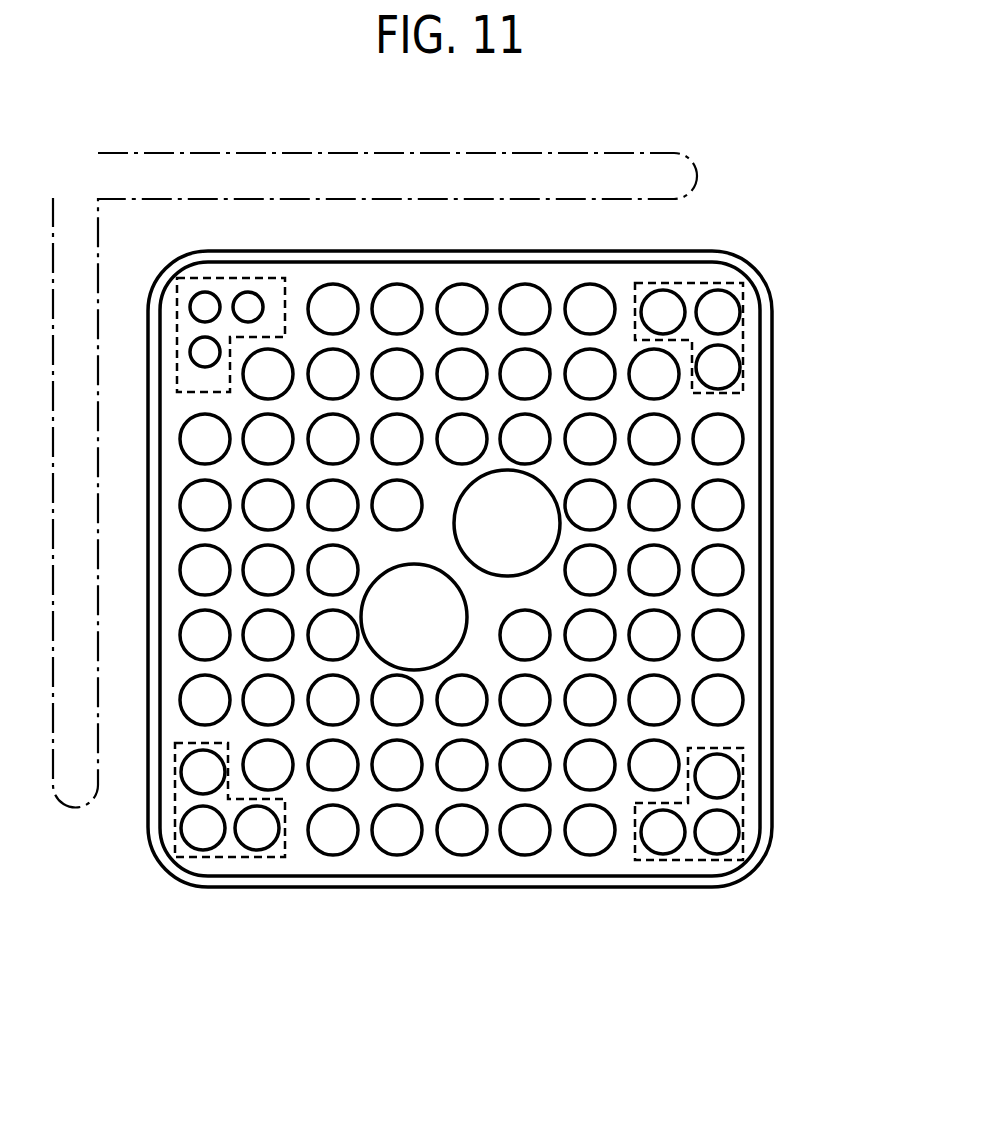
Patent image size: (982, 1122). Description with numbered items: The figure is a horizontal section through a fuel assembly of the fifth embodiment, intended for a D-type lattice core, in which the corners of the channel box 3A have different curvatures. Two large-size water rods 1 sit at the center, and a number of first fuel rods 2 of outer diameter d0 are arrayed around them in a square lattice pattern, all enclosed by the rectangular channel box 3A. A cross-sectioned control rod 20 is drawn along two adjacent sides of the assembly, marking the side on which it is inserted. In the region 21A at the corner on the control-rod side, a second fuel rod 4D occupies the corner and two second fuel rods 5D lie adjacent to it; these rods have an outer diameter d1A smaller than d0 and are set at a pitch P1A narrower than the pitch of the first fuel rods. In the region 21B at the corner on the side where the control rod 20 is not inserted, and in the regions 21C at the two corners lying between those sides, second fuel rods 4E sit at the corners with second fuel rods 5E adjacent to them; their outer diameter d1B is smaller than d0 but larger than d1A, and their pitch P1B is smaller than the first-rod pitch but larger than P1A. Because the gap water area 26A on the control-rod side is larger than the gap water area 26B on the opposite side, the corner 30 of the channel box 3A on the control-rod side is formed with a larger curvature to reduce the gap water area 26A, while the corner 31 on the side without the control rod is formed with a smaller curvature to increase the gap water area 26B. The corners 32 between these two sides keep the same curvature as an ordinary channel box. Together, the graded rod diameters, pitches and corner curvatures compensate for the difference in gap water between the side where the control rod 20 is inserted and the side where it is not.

The water rod 1 is at (450, 628).
The first fuel rod 2 is at (723, 582).
The channel box 3A is at (770, 673).
The cross-sectioned control rod 20 is at (563, 157).
The second fuel rod 4D is at (203, 305).
The second fuel rod 5D is at (207, 350).
The region 21A is at (217, 273).
The outer diameter d1A is at (262, 294).
The outer diameter d0 is at (293, 347).
The pitch P1A is at (205, 307).
The corner 30 is at (157, 268).
The gap water area 26A is at (558, 240).
The gap water area 26B is at (490, 942).
The region 21C is at (747, 383).
The region 21B is at (633, 833).
The outer diameter d1B is at (625, 352).
The corner 32 is at (763, 280).
The corner 31 is at (760, 860).
The pitch P1B is at (718, 312).
The second fuel rod 5E is at (195, 768).
The second fuel rod 4E is at (193, 833).